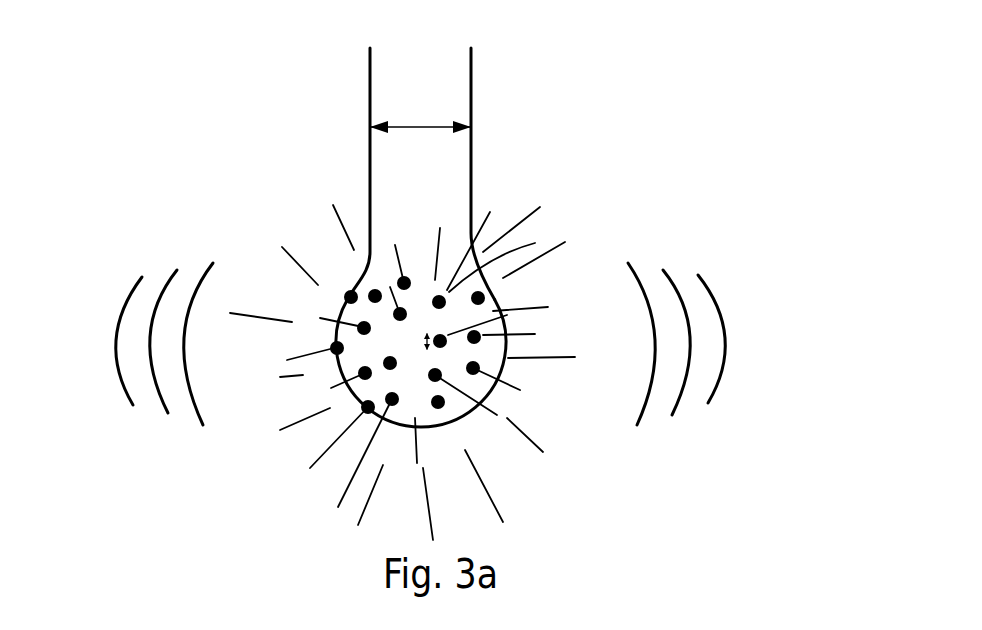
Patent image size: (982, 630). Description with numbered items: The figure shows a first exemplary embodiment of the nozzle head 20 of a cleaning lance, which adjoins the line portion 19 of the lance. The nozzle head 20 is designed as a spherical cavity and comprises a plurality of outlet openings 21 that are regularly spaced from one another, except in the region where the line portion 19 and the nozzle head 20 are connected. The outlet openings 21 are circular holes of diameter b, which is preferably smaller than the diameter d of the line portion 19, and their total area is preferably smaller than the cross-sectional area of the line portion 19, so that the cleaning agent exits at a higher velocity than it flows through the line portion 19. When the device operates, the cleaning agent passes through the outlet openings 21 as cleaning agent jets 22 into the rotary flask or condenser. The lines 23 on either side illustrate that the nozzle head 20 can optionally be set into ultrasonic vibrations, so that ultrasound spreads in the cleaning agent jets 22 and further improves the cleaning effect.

The line portion 19 is at (452, 88).
The nozzle head 20 is at (485, 403).
The outlet openings 21 is at (492, 296).
The cleaning agent jets 22 is at (482, 408).
The lines 23 is at (183, 365).